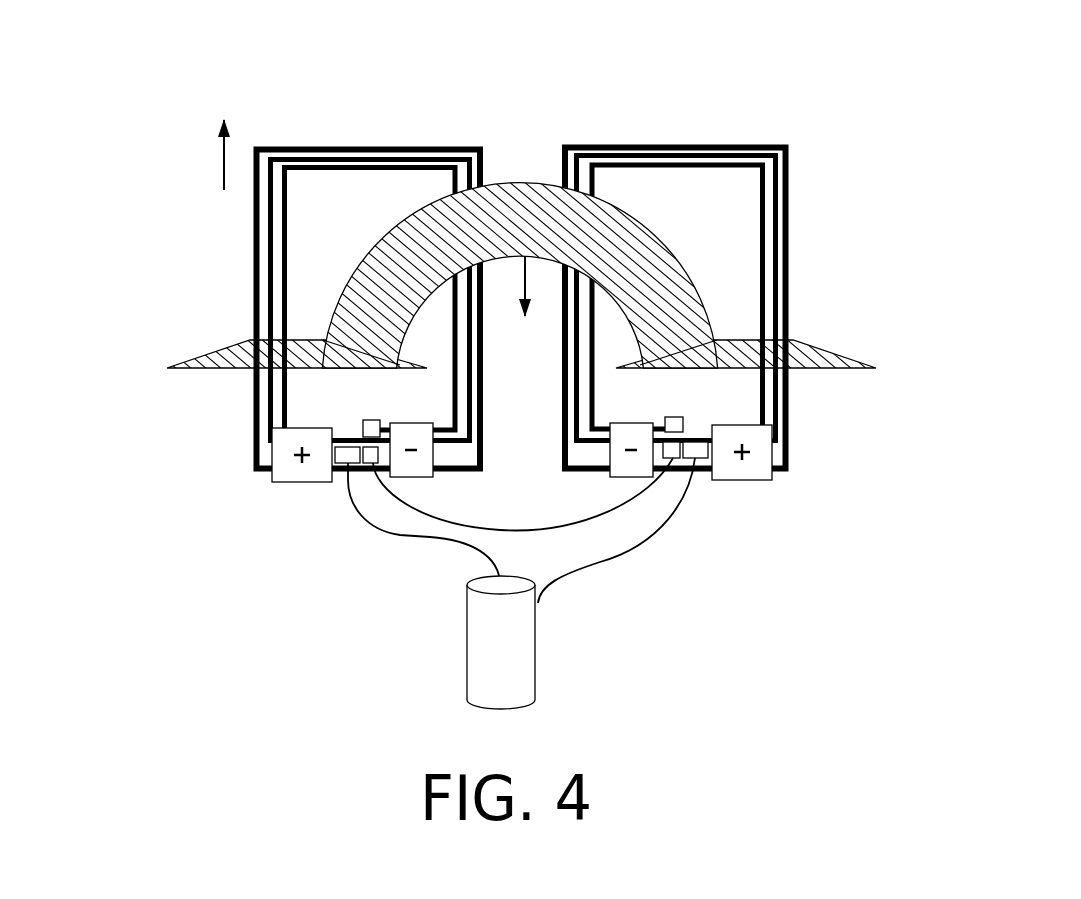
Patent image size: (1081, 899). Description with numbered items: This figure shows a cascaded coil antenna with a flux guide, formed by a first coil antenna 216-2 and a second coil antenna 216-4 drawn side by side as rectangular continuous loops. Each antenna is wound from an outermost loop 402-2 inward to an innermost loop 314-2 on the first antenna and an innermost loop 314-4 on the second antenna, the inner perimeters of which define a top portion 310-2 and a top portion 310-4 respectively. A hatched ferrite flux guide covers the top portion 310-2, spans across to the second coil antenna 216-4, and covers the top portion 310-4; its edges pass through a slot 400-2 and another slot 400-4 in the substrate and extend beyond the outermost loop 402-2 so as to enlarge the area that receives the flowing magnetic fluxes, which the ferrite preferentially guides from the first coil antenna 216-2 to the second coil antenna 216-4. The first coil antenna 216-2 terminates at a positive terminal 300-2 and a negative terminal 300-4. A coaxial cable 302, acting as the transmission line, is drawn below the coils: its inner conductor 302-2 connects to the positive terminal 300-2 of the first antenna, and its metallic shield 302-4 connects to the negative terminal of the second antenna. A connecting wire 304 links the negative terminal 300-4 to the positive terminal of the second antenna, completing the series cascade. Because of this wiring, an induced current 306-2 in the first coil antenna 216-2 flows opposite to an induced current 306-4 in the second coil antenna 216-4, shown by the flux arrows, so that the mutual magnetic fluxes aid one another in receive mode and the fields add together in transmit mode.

The first coil antenna 216-2 is at (295, 254).
The second coil antenna 216-4 is at (636, 259).
The innermost loop of the first coil antenna 314-2 is at (418, 140).
The innermost loop of the second coil antenna 314-4 is at (755, 240).
The top portion 310-2 is at (370, 276).
The top portion of the second coil antenna 310-4 is at (662, 208).
The outermost loop of the first coil antenna 402-2 is at (247, 330).
The slot 400-2 is at (327, 350).
The slot of the second coil antenna 400-4 is at (710, 357).
The induced current in the first coil antenna 306-2 is at (215, 184).
The induced current in the second coil antenna 306-4 is at (519, 276).
The positive terminal 300-2 is at (303, 485).
The negative terminal 300-4 is at (415, 477).
The coaxial cable 302 is at (547, 653).
The inner conductor 302-2 is at (428, 548).
The metallic shield 302-4 is at (600, 570).
The connecting wire 304 is at (627, 512).